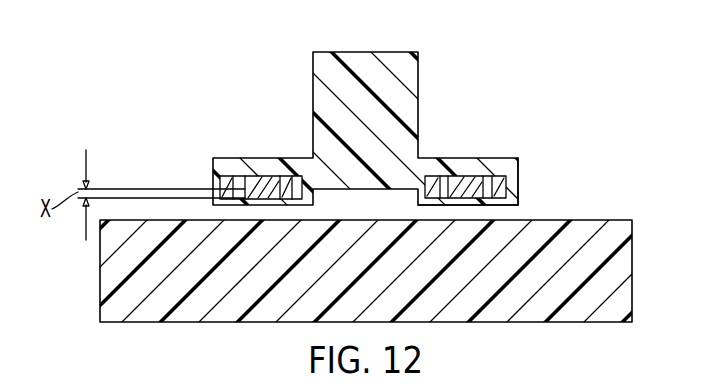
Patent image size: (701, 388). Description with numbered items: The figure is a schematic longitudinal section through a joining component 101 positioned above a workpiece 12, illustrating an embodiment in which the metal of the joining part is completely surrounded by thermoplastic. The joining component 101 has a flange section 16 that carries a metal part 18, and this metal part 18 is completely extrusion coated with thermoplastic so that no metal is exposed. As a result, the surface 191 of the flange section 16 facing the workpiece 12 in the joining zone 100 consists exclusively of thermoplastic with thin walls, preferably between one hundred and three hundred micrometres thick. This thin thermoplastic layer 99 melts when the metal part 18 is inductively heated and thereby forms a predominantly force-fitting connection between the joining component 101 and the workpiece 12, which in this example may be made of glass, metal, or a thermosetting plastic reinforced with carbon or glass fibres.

The joining component 101 is at (434, 88).
The workpiece 12 is at (617, 232).
The flange section 16 is at (270, 172).
The metal part 18 is at (261, 177).
The thin thermoplastic layer 99 is at (480, 199).
The surface of the flange section 191 is at (446, 212).
The joining zone 100 is at (538, 216).